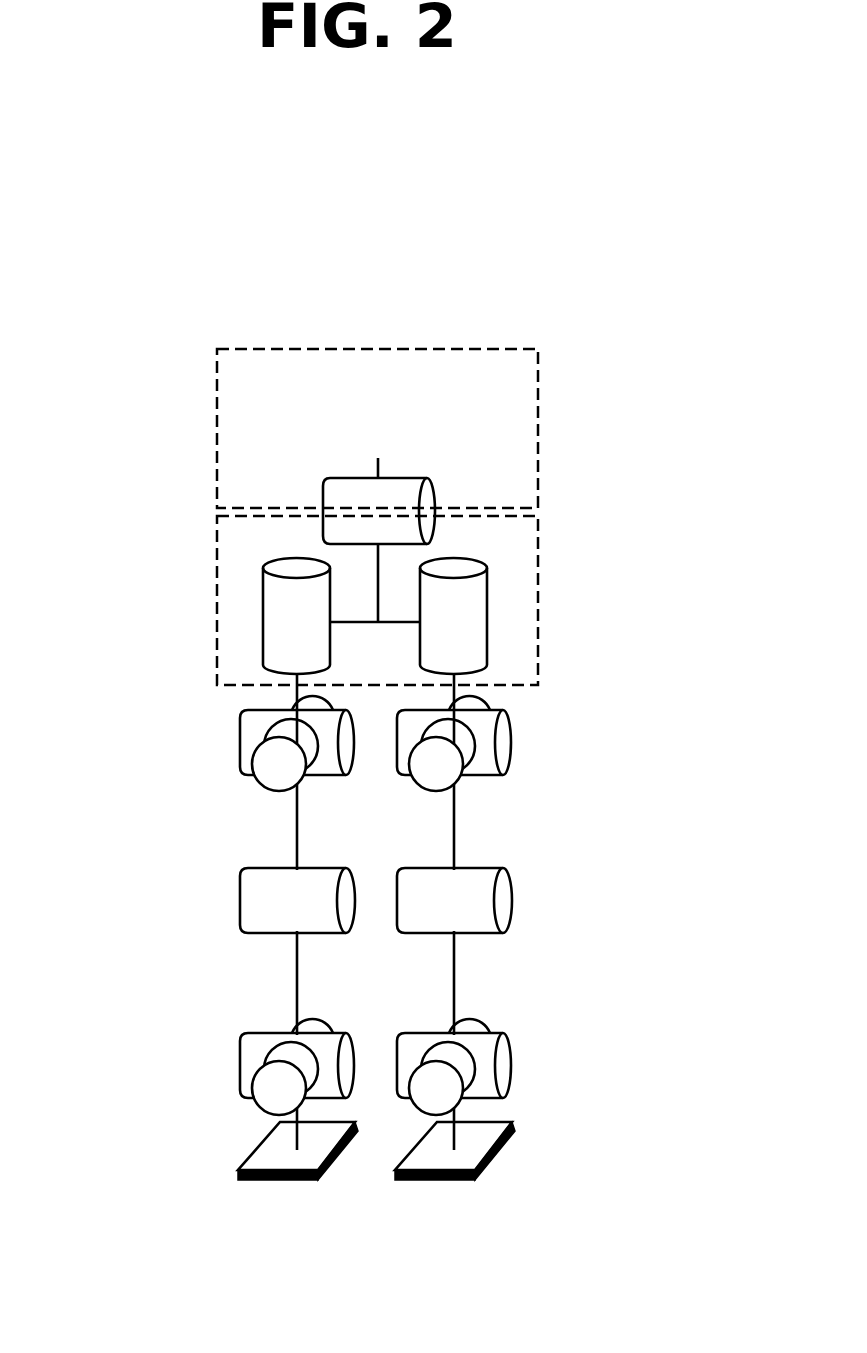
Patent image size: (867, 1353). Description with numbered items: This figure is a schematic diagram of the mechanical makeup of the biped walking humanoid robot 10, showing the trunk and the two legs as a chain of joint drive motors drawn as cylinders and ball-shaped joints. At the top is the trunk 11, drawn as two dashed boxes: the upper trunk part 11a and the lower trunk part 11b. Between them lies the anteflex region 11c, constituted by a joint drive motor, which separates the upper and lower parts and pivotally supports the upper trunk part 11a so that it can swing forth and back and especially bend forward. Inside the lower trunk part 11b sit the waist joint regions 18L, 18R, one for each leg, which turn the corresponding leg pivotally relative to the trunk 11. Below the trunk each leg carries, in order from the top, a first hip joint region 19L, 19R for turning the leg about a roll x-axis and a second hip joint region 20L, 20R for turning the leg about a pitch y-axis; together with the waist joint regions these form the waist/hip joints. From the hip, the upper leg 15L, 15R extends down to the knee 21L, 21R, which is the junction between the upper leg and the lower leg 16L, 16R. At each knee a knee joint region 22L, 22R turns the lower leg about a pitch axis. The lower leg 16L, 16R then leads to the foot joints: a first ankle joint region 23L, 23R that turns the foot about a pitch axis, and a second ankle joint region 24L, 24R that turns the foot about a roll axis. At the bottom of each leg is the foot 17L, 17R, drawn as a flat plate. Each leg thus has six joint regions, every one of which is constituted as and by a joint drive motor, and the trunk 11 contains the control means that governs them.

The biped walking robot 10 is at (597, 345).
The trunk 11 is at (687, 397).
The upper part of the trunk 11a is at (522, 427).
The lower part of the trunk 11b is at (522, 593).
The anteflex region 11c is at (348, 478).
The upper leg 15R is at (297, 838).
The upper leg 15L is at (454, 838).
The lower leg 16R is at (297, 980).
The lower leg 16L is at (454, 982).
The foot 17R is at (283, 1157).
The foot 17L is at (442, 1155).
The waist joint region 18R is at (278, 633).
The waist joint region 18L is at (478, 668).
The first hip joint region 19R is at (272, 778).
The first hip joint region 19L is at (457, 775).
The second hip joint region 20R is at (245, 735).
The second hip joint region 20L is at (502, 737).
The knee 21R is at (232, 865).
The knee 21L is at (520, 858).
The knee joint region 22R is at (237, 903).
The knee joint region 22L is at (503, 895).
The first ankle joint region 23R is at (240, 1070).
The first ankle joint region 23L is at (502, 1062).
The second ankle joint region 24R is at (272, 1100).
The second ankle joint region 24L is at (448, 1093).